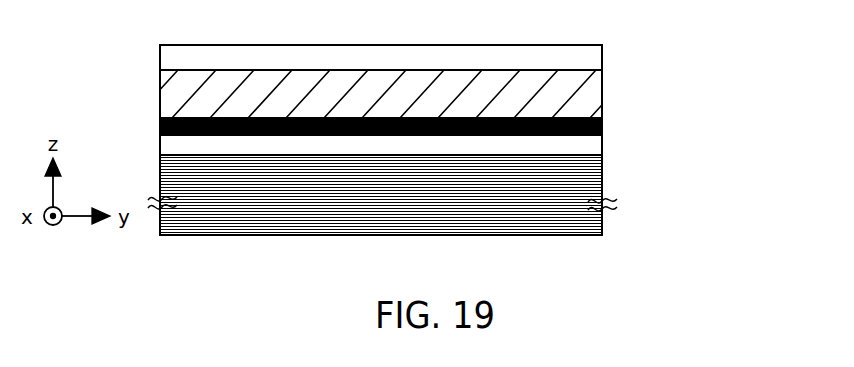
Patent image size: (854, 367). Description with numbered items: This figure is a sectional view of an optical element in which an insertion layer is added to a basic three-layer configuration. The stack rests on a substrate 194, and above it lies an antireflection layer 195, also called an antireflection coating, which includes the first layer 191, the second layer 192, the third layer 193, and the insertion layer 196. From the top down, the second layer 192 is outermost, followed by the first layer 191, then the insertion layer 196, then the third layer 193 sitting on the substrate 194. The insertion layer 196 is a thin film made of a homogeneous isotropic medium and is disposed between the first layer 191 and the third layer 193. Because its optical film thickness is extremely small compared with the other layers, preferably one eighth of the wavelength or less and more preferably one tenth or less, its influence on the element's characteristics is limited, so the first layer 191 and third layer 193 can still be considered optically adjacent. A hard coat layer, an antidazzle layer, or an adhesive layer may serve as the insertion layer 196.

The second layer 192 is at (612, 48).
The first layer 191 is at (612, 80).
The insertion layer 196 is at (612, 125).
The third layer 193 is at (430, 144).
The substrate 194 is at (612, 190).
The antireflection layer 195 is at (468, 95).